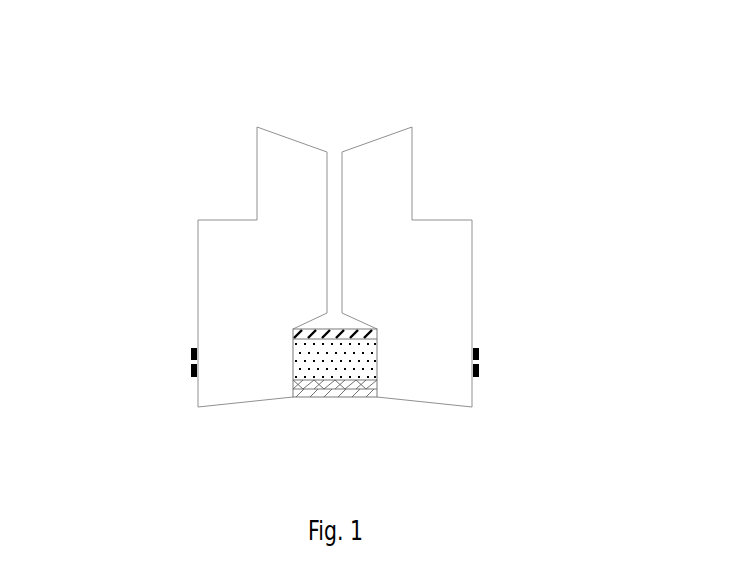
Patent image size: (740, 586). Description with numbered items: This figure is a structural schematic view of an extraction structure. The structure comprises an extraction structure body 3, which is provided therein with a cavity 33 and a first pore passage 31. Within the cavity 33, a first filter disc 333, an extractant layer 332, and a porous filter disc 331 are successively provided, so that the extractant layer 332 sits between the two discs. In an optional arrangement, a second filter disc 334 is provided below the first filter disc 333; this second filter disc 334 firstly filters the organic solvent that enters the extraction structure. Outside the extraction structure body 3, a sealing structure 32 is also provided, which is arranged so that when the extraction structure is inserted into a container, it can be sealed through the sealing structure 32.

The extraction structure body 3 is at (287, 214).
The first pore passage 31 is at (224, 222).
The sealing structure 32 is at (270, 327).
The cavity 33 is at (336, 336).
The porous filter disc 331 is at (222, 271).
The extractant layer 332 is at (222, 403).
The first filter disc 333 is at (449, 323).
The second filter disc 334 is at (445, 435).